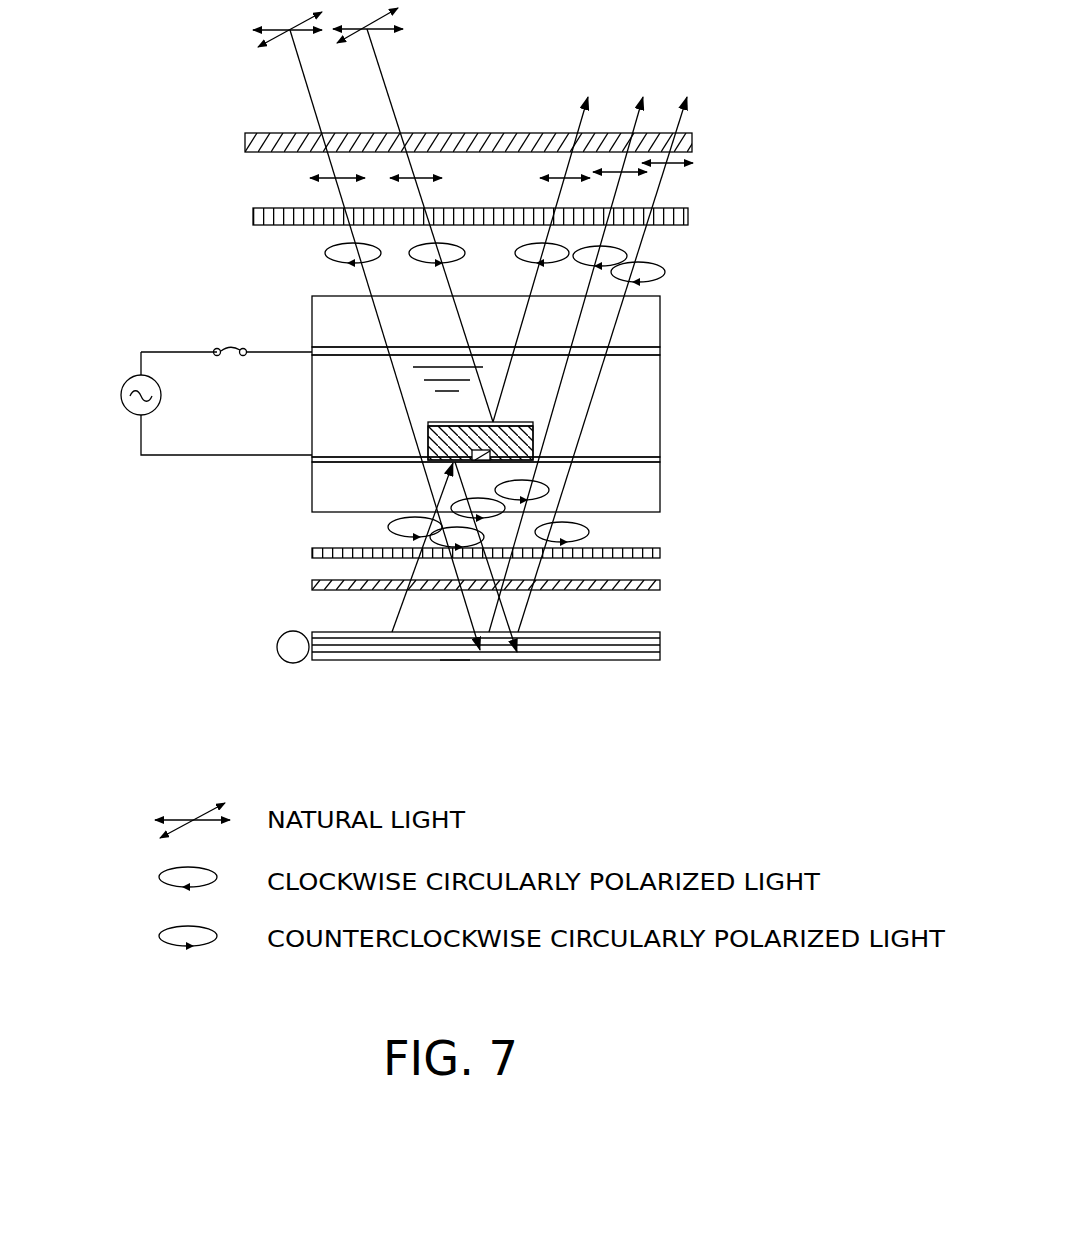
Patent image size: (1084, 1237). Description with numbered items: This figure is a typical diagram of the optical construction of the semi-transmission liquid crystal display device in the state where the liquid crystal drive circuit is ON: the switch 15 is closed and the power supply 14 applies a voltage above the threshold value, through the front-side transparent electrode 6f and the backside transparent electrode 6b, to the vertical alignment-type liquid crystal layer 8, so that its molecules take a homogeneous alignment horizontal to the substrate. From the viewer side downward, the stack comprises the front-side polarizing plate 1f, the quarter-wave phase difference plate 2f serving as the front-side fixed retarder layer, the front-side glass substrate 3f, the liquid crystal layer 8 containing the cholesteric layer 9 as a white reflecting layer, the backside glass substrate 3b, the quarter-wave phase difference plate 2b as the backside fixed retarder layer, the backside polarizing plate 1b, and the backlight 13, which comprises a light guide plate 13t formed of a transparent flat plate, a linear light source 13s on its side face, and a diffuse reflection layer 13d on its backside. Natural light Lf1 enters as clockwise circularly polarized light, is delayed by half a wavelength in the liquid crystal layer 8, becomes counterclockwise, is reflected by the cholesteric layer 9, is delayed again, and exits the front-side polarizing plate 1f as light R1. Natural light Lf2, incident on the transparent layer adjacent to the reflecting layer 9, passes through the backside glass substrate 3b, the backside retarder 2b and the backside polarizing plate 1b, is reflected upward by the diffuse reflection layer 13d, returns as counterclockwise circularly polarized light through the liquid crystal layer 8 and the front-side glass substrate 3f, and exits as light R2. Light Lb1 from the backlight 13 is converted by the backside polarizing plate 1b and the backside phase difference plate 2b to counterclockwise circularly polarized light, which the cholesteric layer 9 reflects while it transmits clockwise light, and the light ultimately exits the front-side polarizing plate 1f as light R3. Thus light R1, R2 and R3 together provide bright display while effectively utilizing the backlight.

The front-side polarizing plate 1f is at (692, 143).
The λ/4 phase difference plate 2f is at (688, 216).
The front-side glass substrate 3f is at (660, 310).
The front-side transparent electrode 6f is at (660, 350).
The vertical alignment-type liquid crystal layer 8 is at (650, 385).
The backside transparent electrode 6b is at (533, 420).
The cholesteric layer 9 is at (520, 443).
The backside glass substrate 3b is at (660, 488).
The λ/4 phase difference plate 2b is at (660, 553).
The backside polarizing plate 1b is at (660, 585).
The backlight 13 is at (712, 686).
The light guide plate 13t is at (660, 642).
The linear light source 13s is at (277, 647).
The diffuse reflection layer 13d is at (455, 660).
The power supply 14 is at (119, 396).
The switch 15 is at (231, 342).
The natural light Lf1 is at (413, 215).
The natural light Lf2 is at (366, 331).
The backlight light Lb1 is at (433, 557).
The reflected light R1 is at (552, 243).
The reflected light R2 is at (578, 348).
The reflected light R3 is at (615, 348).